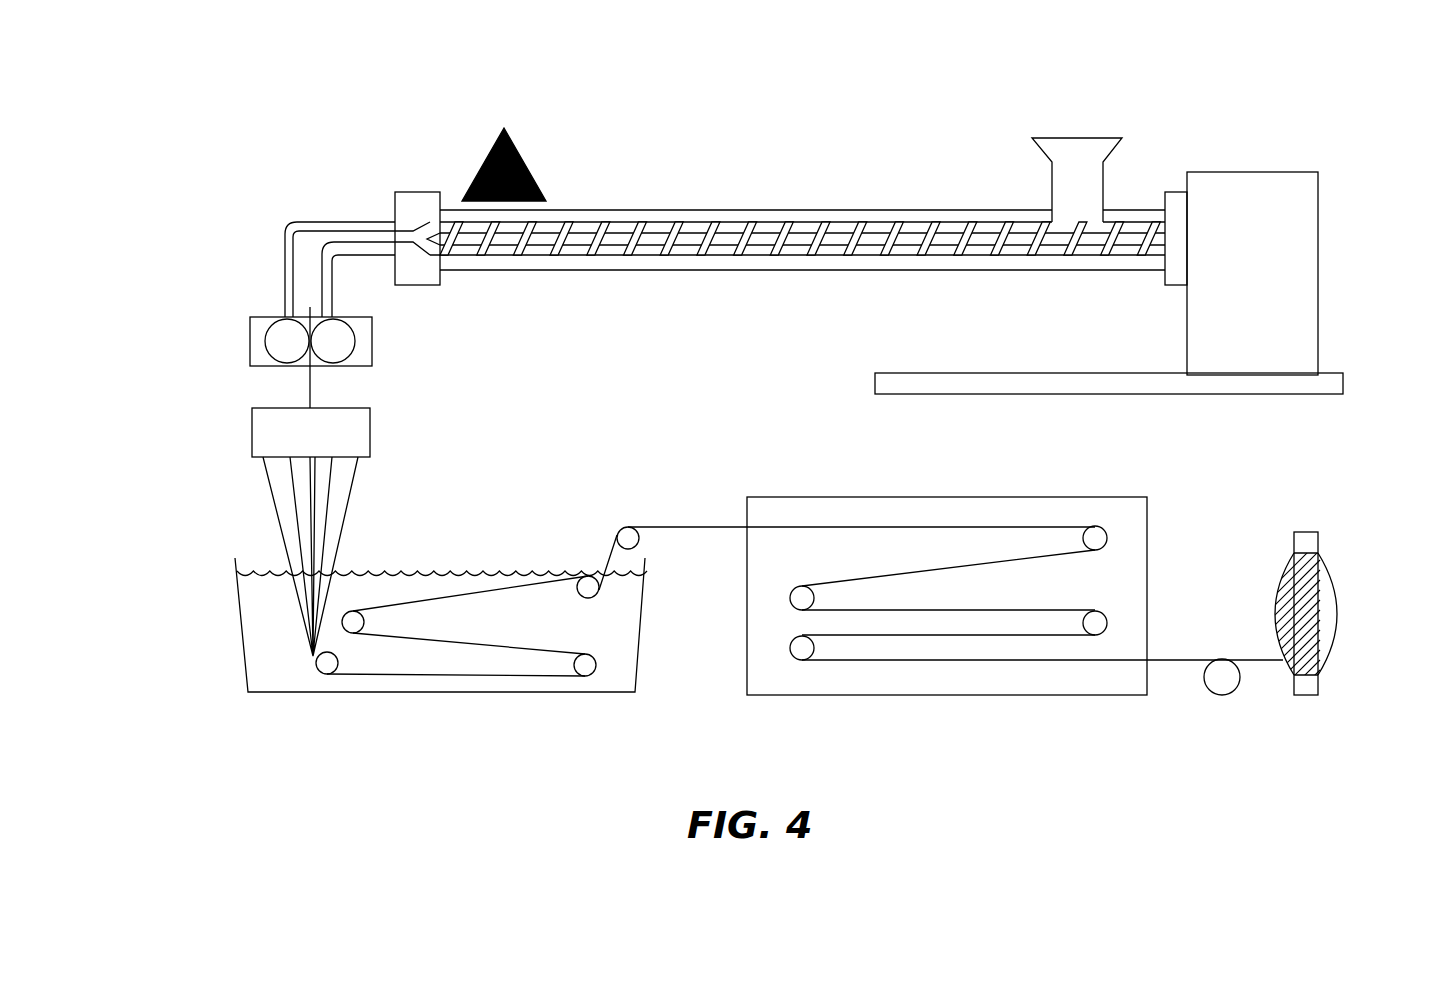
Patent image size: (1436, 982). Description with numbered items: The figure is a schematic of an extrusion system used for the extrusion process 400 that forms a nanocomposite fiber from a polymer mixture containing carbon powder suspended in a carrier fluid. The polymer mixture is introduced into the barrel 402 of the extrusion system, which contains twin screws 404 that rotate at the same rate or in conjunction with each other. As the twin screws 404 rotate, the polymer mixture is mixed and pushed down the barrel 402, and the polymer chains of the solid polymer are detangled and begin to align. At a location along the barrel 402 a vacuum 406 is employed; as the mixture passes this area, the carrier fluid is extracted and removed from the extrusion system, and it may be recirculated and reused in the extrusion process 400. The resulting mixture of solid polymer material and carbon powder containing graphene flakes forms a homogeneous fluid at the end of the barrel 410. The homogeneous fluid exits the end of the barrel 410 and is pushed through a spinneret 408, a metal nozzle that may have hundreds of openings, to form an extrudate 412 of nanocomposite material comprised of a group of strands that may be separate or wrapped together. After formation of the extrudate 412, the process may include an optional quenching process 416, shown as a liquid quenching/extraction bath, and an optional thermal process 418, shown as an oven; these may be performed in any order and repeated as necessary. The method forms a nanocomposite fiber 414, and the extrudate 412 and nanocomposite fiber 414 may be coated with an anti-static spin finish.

The extrusion process 400 is at (203, 232).
The barrel 402 is at (913, 210).
The screw 404 is at (752, 222).
The vacuum 406 is at (506, 127).
The spinneret 408 is at (252, 425).
The end of the barrel 410 is at (397, 237).
The extrudate 412 is at (266, 513).
The nanocomposite fiber 414 is at (1343, 595).
The quenching process 416 is at (242, 640).
The thermal process 418 is at (988, 697).